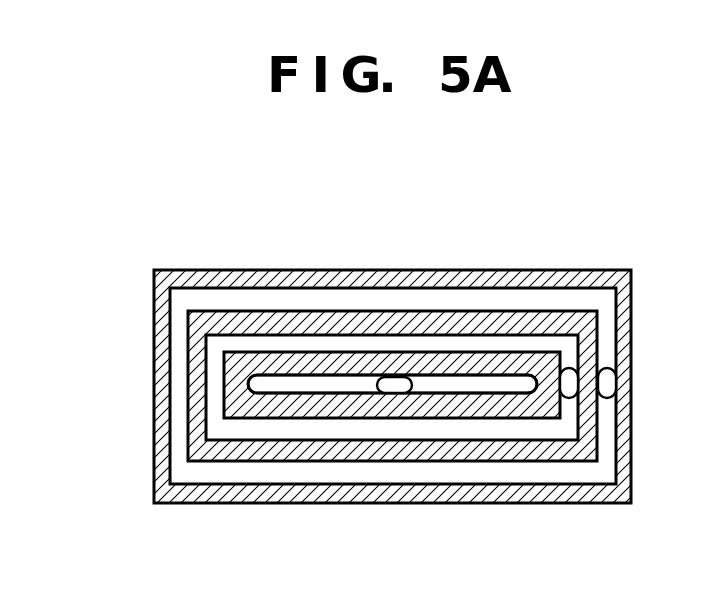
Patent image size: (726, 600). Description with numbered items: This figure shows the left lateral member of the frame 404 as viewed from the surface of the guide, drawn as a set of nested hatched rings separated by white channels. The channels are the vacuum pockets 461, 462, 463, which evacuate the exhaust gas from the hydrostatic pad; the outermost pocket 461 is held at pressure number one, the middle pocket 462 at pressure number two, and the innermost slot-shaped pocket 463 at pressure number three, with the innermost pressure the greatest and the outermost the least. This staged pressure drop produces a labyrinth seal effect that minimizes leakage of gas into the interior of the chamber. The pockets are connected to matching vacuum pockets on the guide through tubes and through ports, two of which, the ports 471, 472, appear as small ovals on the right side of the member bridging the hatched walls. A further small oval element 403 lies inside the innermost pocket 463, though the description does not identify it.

The via / connection in slot 403 is at (394, 377).
The frame 404 is at (557, 270).
The vacuum pocket 461 is at (392, 468).
The vacuum pocket 462 is at (216, 428).
The vacuum pocket 463 is at (258, 387).
The port 471 is at (617, 383).
The port 472 is at (578, 404).